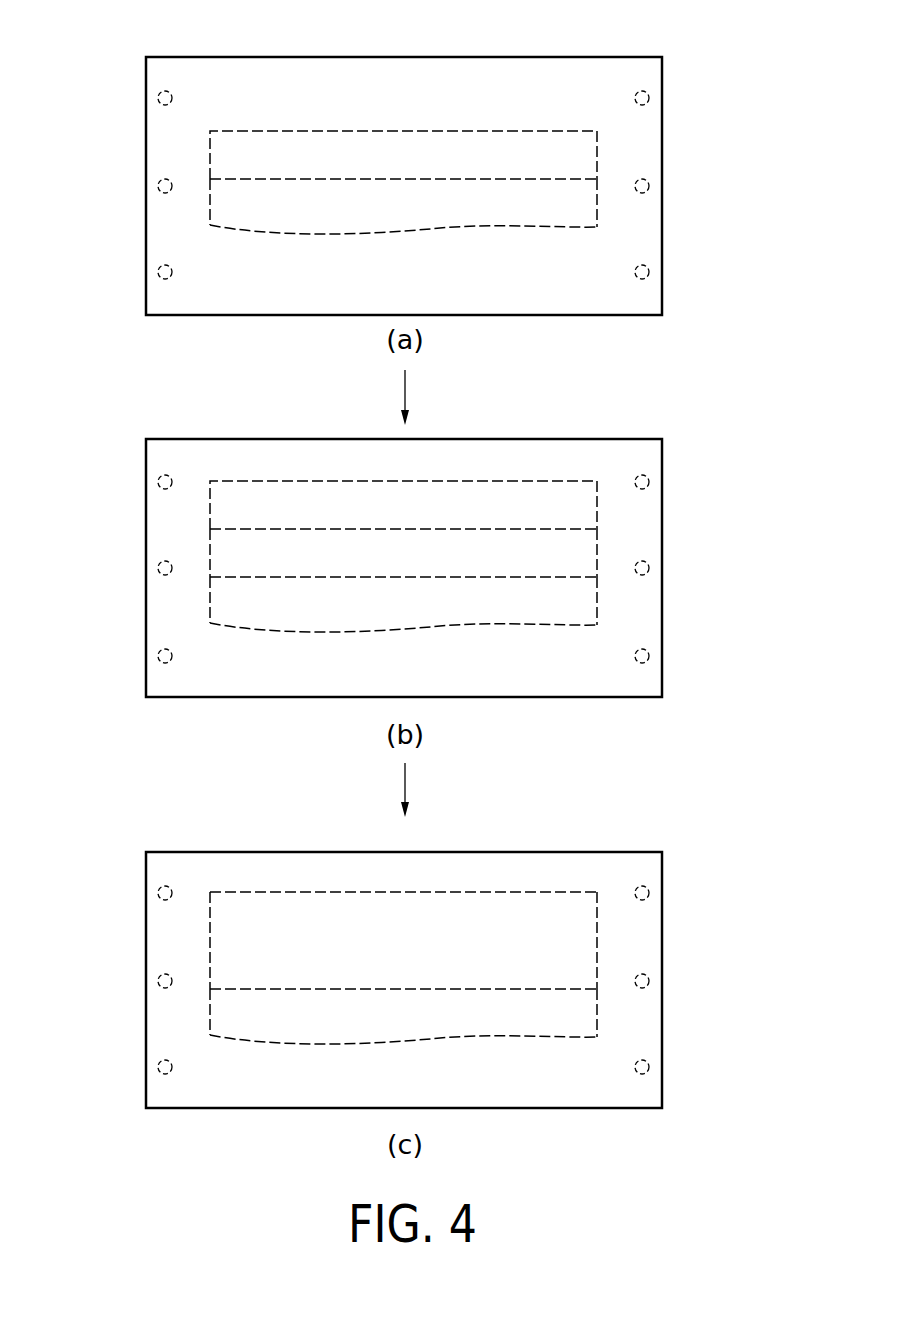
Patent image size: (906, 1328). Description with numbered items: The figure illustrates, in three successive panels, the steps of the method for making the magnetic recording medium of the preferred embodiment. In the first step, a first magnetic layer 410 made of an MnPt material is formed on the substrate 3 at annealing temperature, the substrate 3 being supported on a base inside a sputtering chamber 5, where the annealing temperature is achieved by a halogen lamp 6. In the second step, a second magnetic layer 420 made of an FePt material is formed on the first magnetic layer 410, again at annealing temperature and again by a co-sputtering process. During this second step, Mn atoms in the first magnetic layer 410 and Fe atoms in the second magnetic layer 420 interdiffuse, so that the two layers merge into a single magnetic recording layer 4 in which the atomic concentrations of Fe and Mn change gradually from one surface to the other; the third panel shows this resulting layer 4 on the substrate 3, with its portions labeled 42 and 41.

The sputtering chamber 5 is at (188, 57).
The halogen lamp 6 is at (158, 98).
The first magnetic layer 410 is at (588, 157).
The second magnetic layer 420 is at (587, 503).
The magnetic recording layer 4 is at (771, 485).
The first conductive portion 41 is at (246, 989).
The second conductive portion 42 is at (244, 892).
The substrate 3 is at (586, 210).